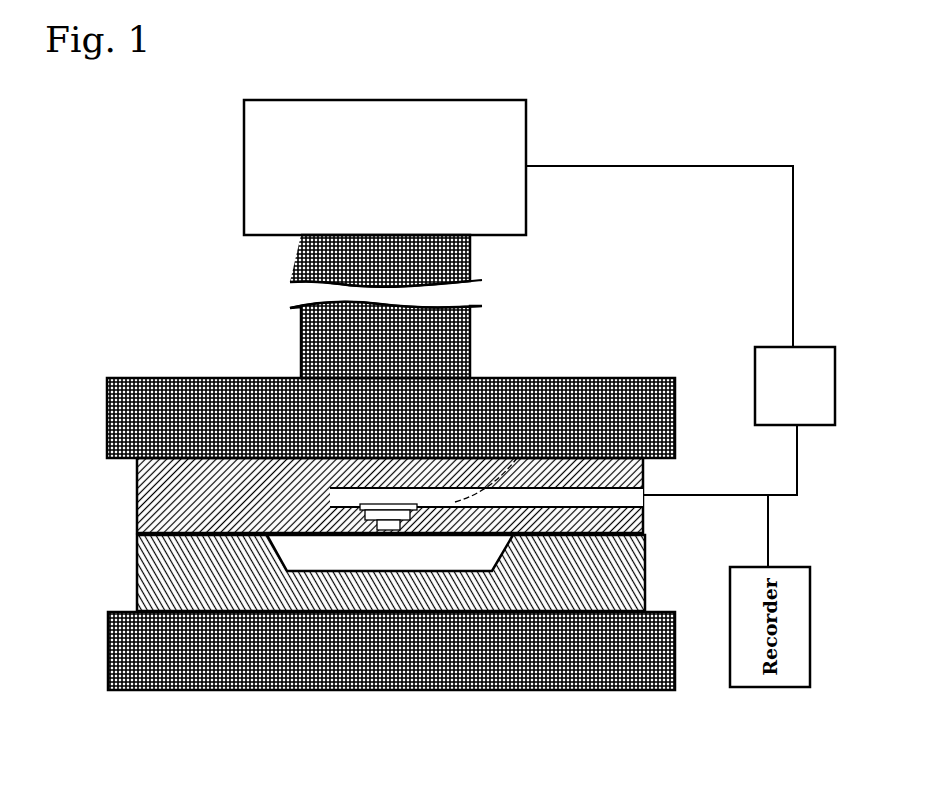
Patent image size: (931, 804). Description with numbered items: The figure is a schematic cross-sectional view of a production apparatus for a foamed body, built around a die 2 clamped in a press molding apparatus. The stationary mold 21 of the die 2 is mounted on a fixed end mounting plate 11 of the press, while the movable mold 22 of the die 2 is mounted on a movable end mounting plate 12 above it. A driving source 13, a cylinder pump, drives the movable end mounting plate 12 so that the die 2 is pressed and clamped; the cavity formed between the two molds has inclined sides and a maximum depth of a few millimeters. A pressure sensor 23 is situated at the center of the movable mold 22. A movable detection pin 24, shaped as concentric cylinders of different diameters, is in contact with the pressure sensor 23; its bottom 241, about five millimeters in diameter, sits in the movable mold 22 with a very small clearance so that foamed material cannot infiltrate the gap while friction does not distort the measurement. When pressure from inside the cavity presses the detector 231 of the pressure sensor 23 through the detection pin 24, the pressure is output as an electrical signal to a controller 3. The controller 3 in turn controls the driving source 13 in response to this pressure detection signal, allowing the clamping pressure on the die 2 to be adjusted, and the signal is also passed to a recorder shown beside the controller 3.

The die 2 is at (325, 537).
The controller 3 is at (680, 295).
The fixed end mounting plate 11 is at (547, 690).
The movable end mounting plate 12 is at (505, 455).
The driving source 13 is at (385, 167).
The stationary mold 21 is at (354, 573).
The movable mold 22 is at (137, 508).
The pressure sensor 23 is at (550, 455).
The detector 231 is at (600, 455).
The detection pin 24 is at (435, 503).
The bottom of detection pin 241 is at (345, 508).